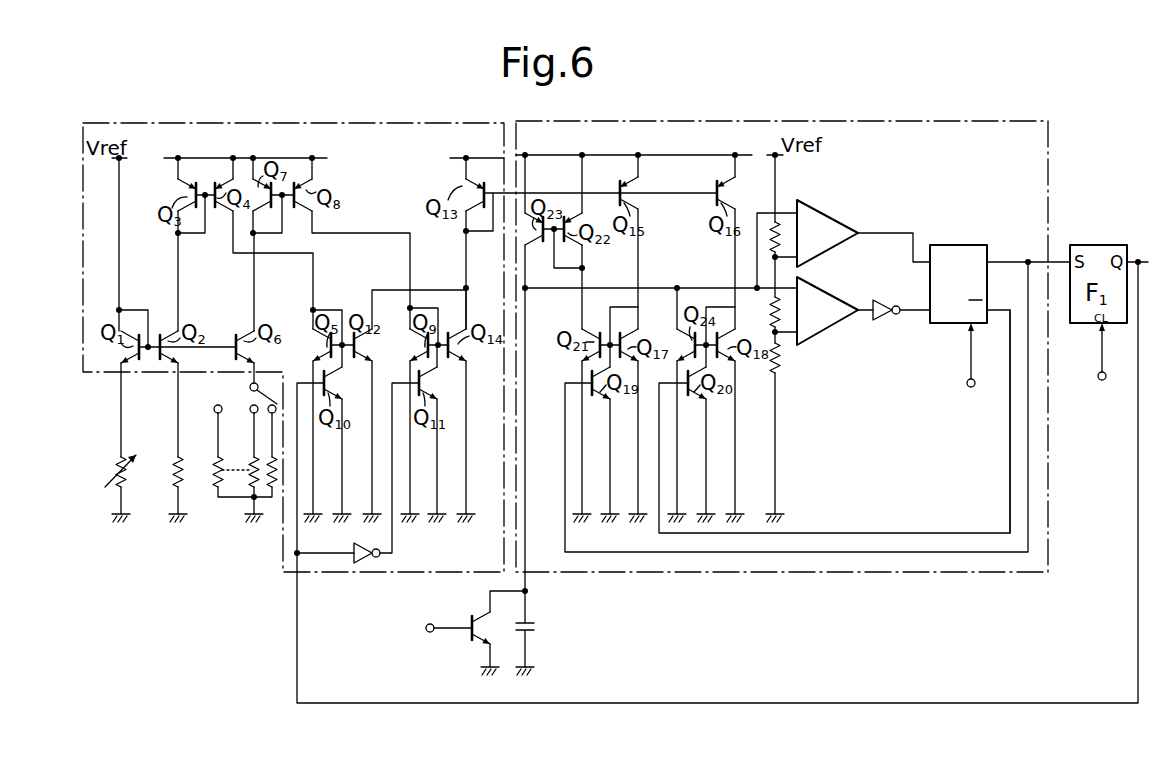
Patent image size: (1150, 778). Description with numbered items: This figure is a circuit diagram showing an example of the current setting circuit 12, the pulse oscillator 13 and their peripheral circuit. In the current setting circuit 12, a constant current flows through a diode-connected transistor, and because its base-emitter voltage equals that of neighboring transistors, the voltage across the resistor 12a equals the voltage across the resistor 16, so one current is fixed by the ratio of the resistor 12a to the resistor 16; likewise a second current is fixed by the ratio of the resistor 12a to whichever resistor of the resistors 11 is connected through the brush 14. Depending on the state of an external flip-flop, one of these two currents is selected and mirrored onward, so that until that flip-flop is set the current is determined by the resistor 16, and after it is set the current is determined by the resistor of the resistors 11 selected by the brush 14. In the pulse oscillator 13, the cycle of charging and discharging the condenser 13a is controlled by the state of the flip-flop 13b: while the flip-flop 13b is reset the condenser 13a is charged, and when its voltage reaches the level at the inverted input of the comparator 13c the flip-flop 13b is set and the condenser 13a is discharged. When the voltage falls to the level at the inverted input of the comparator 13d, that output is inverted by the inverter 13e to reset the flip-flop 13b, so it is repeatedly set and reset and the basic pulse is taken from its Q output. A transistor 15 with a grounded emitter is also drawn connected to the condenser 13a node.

The resistors 11 is at (231, 502).
The current setting circuit 12 is at (362, 574).
The resistor 12a is at (113, 465).
The pulse oscillator 13 is at (881, 574).
The condenser 13a is at (538, 628).
The flip-flop 13b is at (947, 324).
The comparator 13c is at (829, 218).
The comparator 13d is at (834, 297).
The inverter 13e is at (881, 322).
The brush 14 is at (262, 398).
The transistor 15 is at (480, 645).
The resistor 16 is at (175, 480).